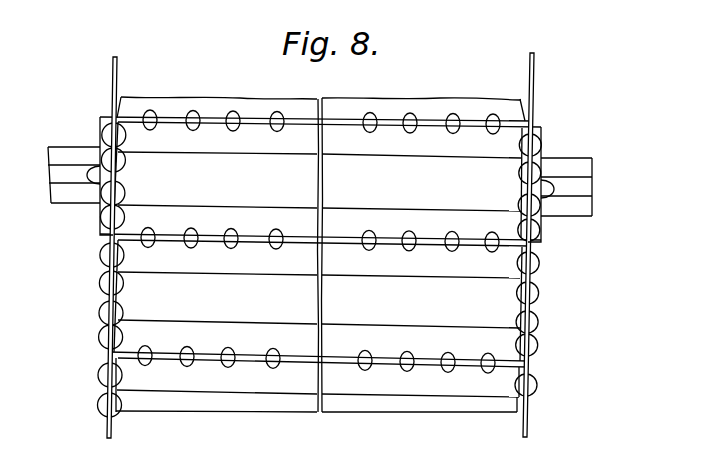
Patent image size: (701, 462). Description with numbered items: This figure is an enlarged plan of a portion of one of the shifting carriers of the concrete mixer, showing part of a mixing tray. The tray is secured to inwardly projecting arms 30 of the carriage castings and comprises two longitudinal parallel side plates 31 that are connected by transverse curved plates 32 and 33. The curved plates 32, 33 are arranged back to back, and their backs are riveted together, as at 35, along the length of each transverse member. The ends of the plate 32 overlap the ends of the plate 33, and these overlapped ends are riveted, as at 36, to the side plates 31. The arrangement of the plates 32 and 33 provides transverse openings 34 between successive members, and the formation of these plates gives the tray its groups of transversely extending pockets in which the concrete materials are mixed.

The inwardly projecting arm 30 is at (52, 178).
The side plate 31 is at (106, 428).
The transverse curved plate 32 is at (463, 240).
The transverse curved plate 33 is at (478, 130).
The transverse opening 34 is at (347, 255).
The rivet 35 is at (408, 369).
The rivet 36 is at (535, 291).